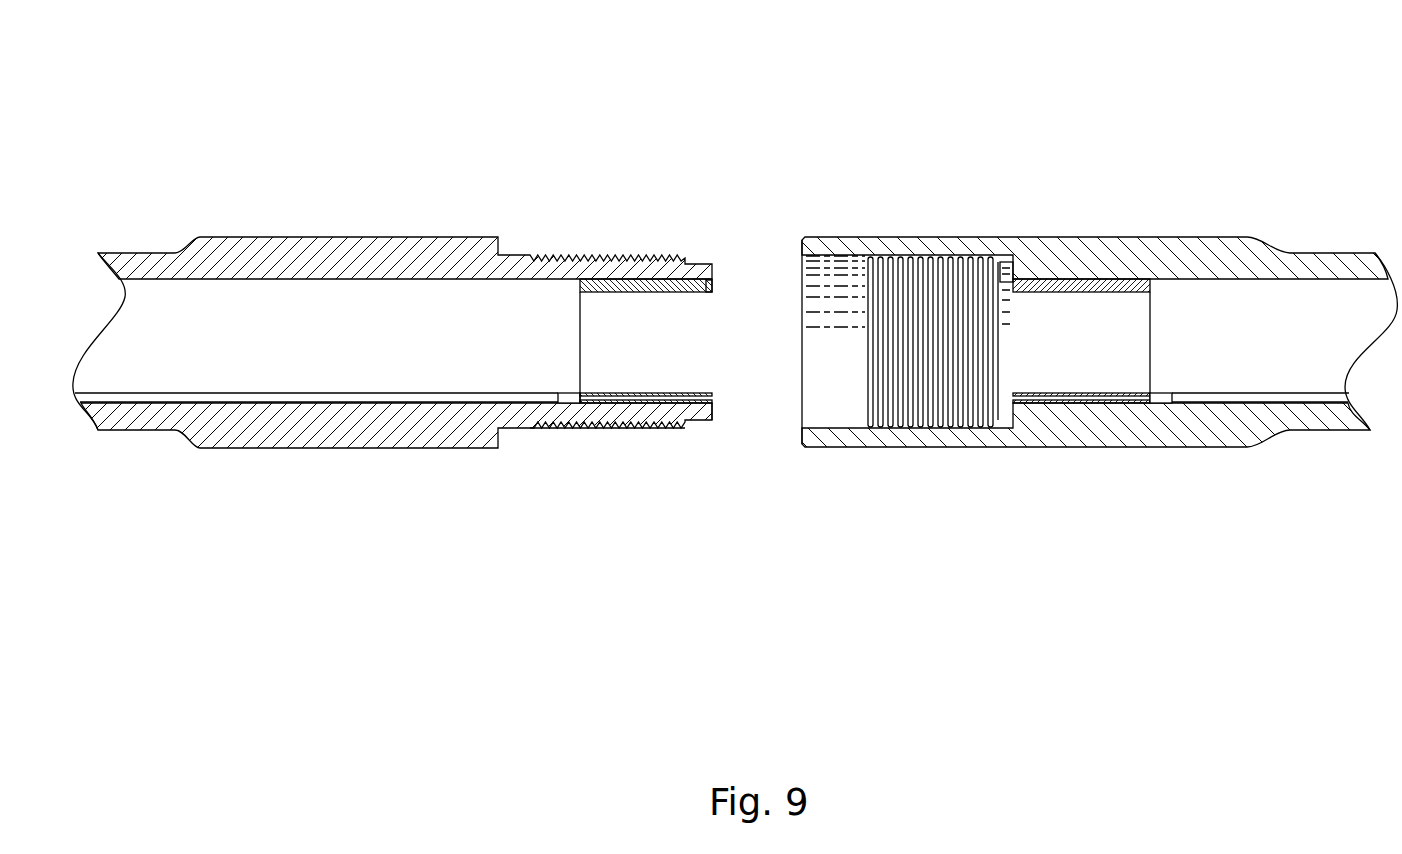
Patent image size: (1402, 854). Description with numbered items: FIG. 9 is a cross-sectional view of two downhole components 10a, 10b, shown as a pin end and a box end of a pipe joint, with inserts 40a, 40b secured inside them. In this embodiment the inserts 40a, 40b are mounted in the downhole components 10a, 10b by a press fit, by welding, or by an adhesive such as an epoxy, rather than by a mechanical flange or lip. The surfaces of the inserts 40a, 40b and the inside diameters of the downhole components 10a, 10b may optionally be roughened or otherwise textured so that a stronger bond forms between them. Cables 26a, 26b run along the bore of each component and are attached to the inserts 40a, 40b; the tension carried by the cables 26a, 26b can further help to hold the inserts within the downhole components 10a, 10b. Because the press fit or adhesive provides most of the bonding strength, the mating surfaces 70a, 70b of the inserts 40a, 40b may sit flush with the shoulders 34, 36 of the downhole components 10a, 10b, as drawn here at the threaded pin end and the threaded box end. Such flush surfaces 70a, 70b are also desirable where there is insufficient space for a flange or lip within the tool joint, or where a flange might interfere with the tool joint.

The downhole component 10a is at (400, 114).
The downhole component 10b is at (1103, 145).
The cable 26a is at (450, 393).
The cable 26b is at (1235, 393).
The insert 40a is at (628, 262).
The insert 40b is at (1128, 292).
The mating surface 70a is at (718, 283).
The mating surface 70b is at (1007, 278).
The shoulder 34 is at (714, 421).
The shoulder 36 is at (1010, 414).